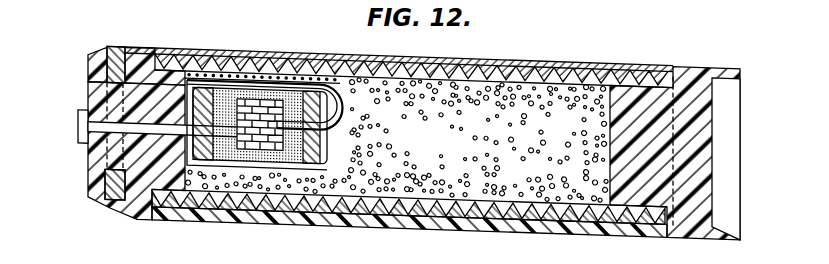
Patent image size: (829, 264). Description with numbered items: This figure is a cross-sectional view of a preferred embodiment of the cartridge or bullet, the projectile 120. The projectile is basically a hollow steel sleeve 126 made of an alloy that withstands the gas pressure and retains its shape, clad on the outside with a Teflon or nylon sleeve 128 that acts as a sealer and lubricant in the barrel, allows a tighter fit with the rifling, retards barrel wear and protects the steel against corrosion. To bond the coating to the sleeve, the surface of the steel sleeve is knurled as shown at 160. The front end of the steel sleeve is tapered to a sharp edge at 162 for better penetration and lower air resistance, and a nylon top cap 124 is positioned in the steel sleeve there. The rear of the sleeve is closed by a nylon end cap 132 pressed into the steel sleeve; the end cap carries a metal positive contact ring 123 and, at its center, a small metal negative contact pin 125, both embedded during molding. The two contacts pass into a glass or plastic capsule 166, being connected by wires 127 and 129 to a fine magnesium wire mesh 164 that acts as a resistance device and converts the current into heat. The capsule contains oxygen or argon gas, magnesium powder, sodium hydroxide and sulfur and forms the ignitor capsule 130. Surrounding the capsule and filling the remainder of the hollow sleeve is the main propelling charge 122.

The projectile 120 is at (520, 50).
The propelling charge 122 is at (430, 190).
The positive contact ring 123 is at (113, 46).
The nylon top cap 124 is at (697, 67).
The negative contact pin 125 is at (80, 133).
The steel sleeve 126 is at (498, 203).
The wire 127 is at (263, 80).
The nylon sleeve 128 is at (530, 230).
The wire 129 is at (117, 118).
The ignitor capsule 130 is at (323, 160).
The end cap 132 is at (88, 70).
The knurled surface 160 is at (362, 213).
The tapered front end 162 is at (657, 80).
The magnesium wire mesh 164 is at (322, 140).
The capsule 166 is at (242, 163).